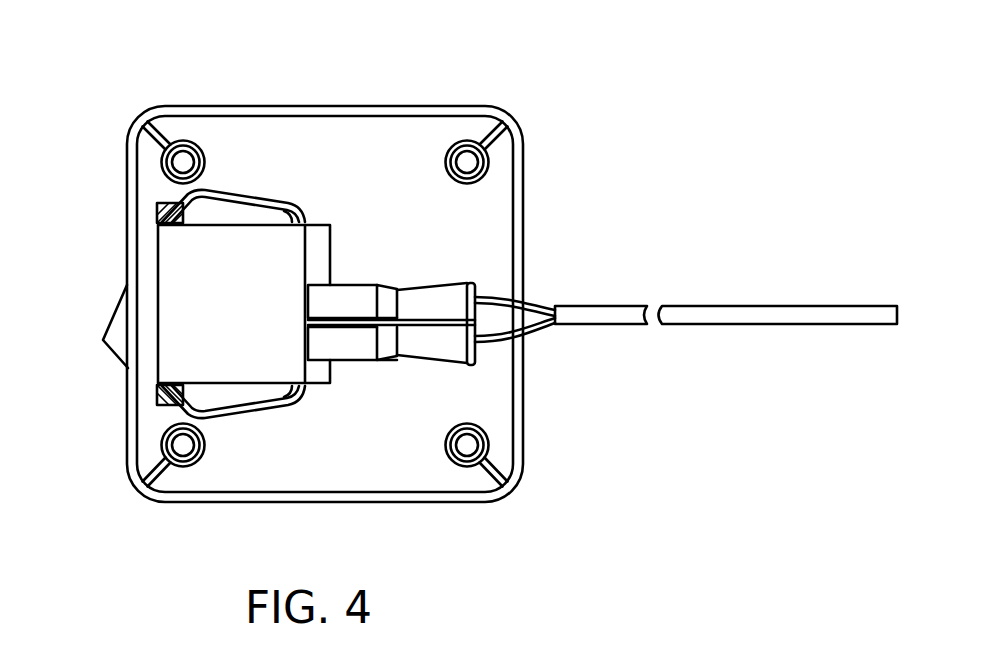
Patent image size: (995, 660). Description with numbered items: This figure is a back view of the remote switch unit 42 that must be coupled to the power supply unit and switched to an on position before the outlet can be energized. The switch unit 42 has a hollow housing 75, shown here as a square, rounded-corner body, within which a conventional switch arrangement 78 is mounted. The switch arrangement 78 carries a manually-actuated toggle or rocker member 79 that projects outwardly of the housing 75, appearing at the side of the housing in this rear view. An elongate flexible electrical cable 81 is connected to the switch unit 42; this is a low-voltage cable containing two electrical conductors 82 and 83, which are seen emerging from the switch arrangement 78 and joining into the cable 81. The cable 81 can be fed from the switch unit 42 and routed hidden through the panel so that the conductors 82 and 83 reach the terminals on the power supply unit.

The switch unit 42 is at (452, 99).
The housing 75 is at (524, 192).
The switch arrangement 78 is at (287, 242).
The toggle or rocker member 79 is at (120, 328).
The electrical cable 81 is at (844, 312).
The electrical conductor 82 is at (498, 293).
The electrical conductor 83 is at (495, 340).